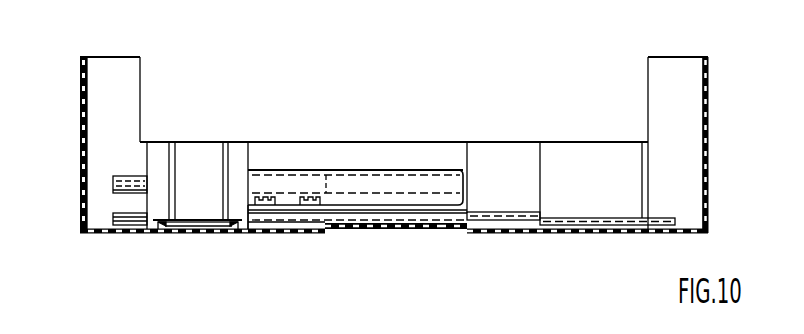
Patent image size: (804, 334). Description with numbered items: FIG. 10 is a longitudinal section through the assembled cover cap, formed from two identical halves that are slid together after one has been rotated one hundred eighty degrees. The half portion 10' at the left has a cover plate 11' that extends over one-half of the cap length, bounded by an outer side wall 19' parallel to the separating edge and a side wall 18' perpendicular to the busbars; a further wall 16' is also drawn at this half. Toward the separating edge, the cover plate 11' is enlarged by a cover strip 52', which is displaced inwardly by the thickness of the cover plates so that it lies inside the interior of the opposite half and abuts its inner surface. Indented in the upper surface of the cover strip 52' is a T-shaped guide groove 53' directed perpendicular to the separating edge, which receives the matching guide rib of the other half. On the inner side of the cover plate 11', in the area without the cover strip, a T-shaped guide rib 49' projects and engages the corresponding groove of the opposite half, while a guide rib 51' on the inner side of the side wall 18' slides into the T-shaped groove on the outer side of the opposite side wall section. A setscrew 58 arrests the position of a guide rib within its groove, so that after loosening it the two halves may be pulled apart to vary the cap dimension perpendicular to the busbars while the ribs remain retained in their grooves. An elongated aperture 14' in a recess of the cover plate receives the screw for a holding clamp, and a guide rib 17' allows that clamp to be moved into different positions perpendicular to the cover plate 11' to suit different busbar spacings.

The half portion of the cover cap 10' is at (303, 133).
The cover plate 11' is at (202, 258).
The elongated aperture 14' is at (197, 256).
The end wall of first module 16' is at (254, 166).
The guide rib 17' is at (196, 160).
The side wall 18' is at (122, 123).
The side wall 19' is at (94, 145).
The guide rib 49' is at (126, 249).
The guide rib 51' is at (122, 155).
The cover strip 52' is at (382, 257).
The guide groove 53' is at (503, 187).
The setscrew 58 is at (272, 197).